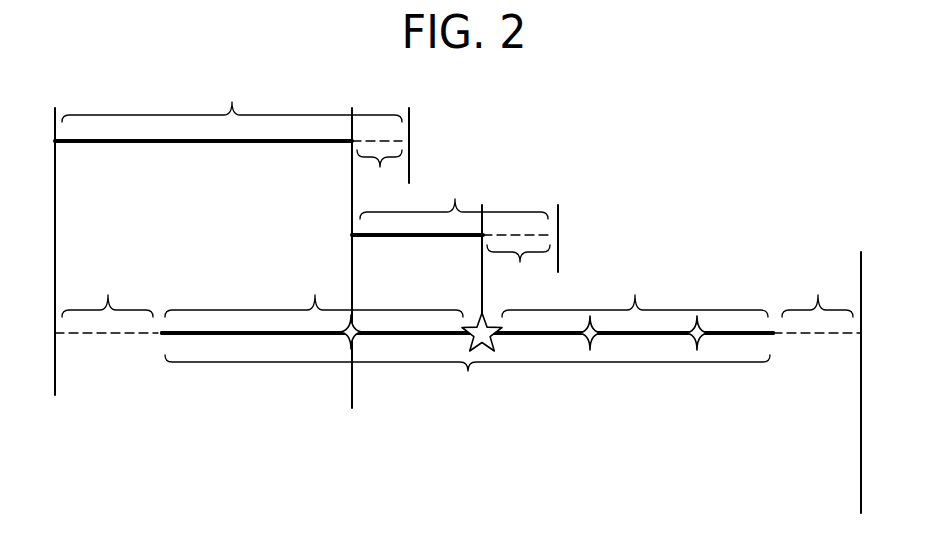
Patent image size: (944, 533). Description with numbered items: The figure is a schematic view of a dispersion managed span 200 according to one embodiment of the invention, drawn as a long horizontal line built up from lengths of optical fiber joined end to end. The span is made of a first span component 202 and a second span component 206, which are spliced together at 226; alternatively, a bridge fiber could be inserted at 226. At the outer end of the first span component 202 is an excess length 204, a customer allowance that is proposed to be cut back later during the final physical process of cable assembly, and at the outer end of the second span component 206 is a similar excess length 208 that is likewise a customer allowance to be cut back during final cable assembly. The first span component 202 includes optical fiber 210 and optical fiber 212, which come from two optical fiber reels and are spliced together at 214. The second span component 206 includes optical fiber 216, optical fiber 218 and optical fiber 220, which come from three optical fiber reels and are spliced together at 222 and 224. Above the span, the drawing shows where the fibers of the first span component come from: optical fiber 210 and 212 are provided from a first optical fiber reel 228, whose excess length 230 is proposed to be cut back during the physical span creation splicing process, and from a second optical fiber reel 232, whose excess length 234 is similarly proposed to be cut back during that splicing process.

The dispersion managed span 200 is at (458, 368).
The first span component 202 is at (314, 291).
The excess length 204 is at (107, 291).
The second span component 206 is at (635, 291).
The excess length 208 is at (817, 291).
The optical fiber 210 is at (267, 336).
The optical fiber 212 is at (402, 336).
The splice 214 is at (356, 326).
The optical fiber 216 is at (558, 336).
The optical fiber 218 is at (648, 336).
The optical fiber 220 is at (750, 336).
The splice 222 is at (590, 317).
The splice 224 is at (697, 317).
The splice 226 is at (492, 346).
The first optical fiber reel 228 is at (228, 107).
The excess length 230 is at (377, 170).
The second optical fiber reel 232 is at (450, 202).
The excess length 234 is at (516, 268).